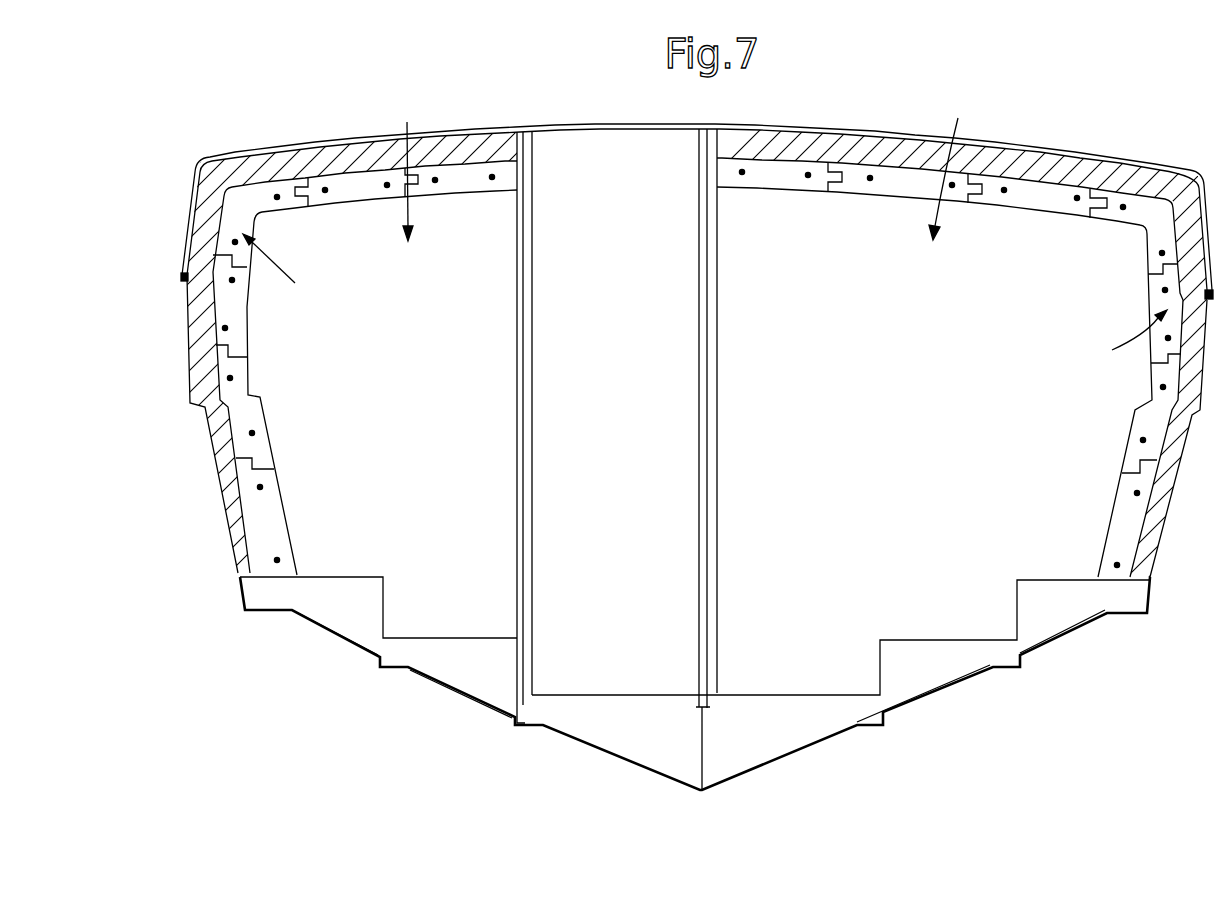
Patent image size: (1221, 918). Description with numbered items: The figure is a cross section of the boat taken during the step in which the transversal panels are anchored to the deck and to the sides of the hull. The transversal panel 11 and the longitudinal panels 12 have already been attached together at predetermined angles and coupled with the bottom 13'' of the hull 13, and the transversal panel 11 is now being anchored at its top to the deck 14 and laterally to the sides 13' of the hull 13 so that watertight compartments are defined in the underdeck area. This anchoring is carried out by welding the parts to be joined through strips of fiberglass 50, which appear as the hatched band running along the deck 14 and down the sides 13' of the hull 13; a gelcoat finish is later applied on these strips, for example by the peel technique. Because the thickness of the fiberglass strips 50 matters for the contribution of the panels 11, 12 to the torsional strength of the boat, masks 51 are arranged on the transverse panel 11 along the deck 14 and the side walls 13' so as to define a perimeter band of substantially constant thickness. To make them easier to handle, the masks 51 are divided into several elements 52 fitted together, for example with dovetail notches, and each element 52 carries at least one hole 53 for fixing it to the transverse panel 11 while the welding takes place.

The transversal panel 11 is at (687, 165).
The longitudinal panel 12 is at (703, 165).
The hull 13 is at (695, 688).
The side of the hull 13' is at (700, 427).
The bottom of the hull 13'' is at (938, 710).
The deck 14 is at (308, 146).
The strip of fiberglass 50 is at (213, 180).
The mask 51 is at (705, 296).
The element 52 is at (275, 208).
The hole 53 is at (388, 183).